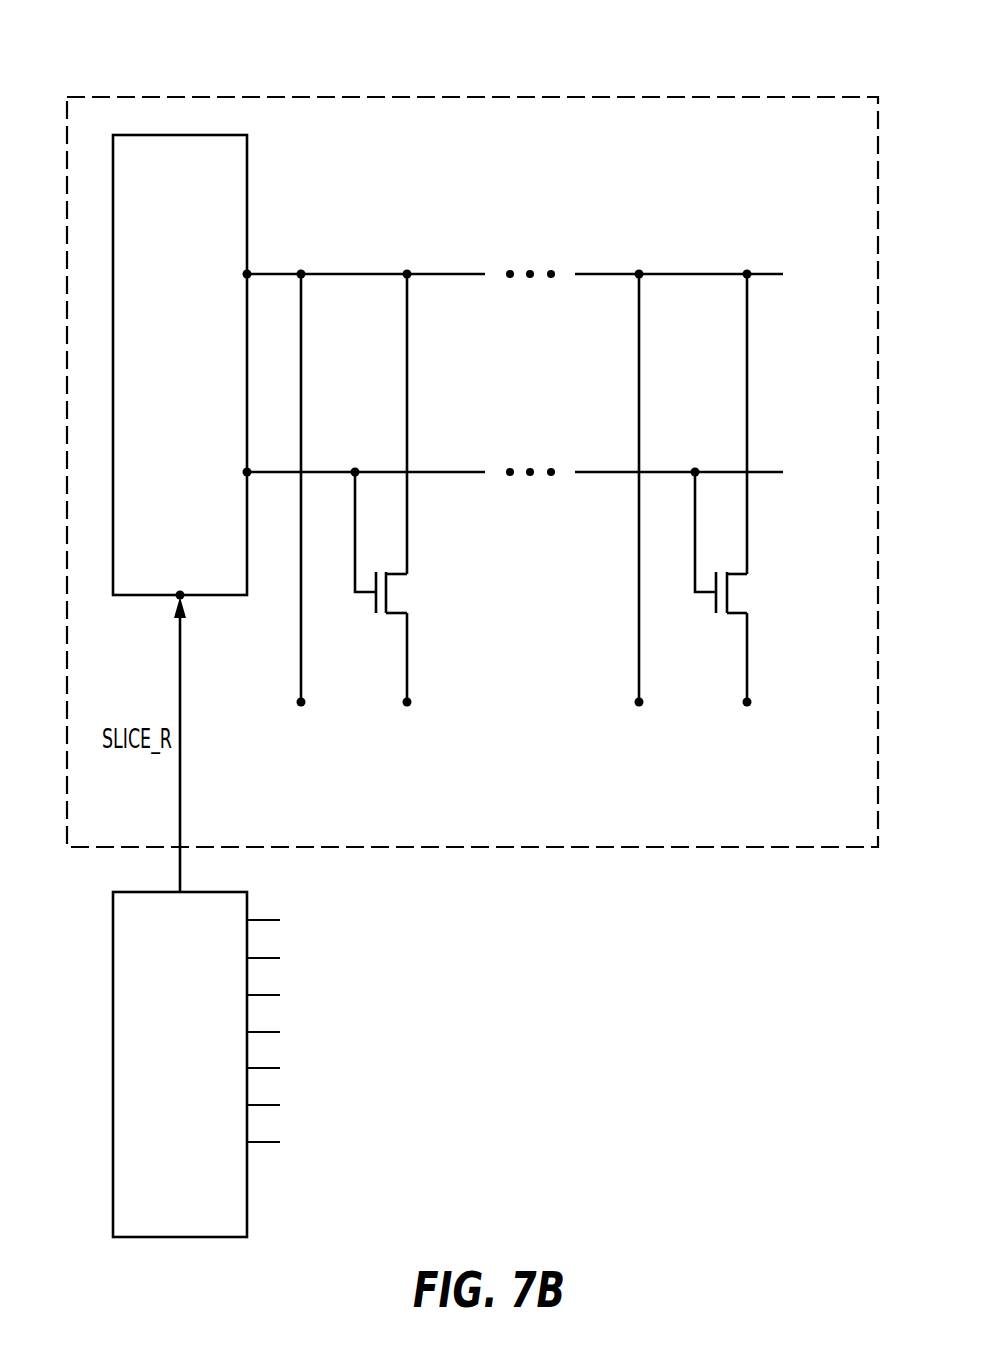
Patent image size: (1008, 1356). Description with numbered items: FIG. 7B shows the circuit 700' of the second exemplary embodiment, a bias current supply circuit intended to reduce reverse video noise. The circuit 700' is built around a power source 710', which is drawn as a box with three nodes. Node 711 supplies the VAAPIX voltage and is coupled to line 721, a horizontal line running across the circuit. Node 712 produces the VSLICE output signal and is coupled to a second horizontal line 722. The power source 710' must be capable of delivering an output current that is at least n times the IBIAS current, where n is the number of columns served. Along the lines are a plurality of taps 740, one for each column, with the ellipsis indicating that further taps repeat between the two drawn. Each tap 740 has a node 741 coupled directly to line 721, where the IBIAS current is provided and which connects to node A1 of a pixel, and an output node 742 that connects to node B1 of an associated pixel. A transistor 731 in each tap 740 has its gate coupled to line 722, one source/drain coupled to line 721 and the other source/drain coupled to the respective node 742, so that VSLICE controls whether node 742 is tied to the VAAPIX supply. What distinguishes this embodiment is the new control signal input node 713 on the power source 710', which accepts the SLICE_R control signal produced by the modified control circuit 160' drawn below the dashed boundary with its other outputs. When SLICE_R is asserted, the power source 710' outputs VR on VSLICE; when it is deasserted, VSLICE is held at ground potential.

The power source (bias current supply circuit) 700' is at (472, 429).
The power source 710' is at (180, 365).
The node 711 is at (247, 274).
The node 712 is at (247, 472).
The control signal input node 713 is at (180, 592).
The line 721 is at (775, 272).
The line 722 is at (775, 470).
The transistor 731 is at (387, 598).
The tap 740 is at (418, 762).
The node 741 is at (301, 706).
The node 742 is at (407, 706).
The control circuit 160' is at (230, 1064).